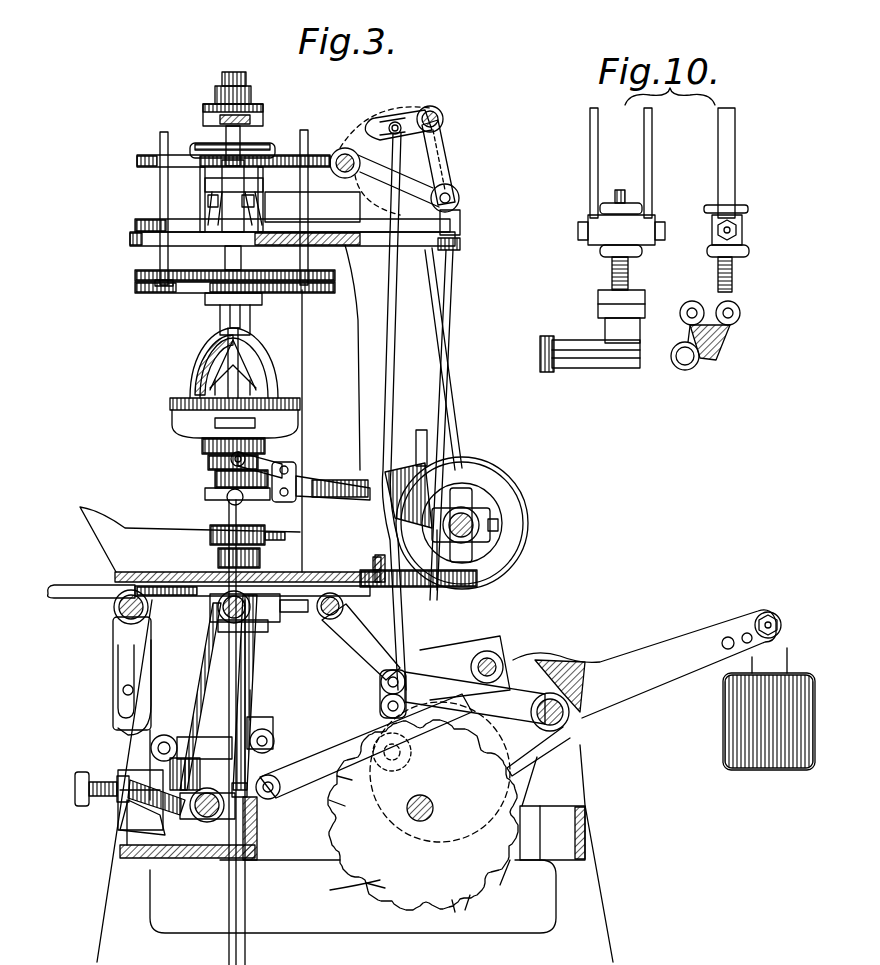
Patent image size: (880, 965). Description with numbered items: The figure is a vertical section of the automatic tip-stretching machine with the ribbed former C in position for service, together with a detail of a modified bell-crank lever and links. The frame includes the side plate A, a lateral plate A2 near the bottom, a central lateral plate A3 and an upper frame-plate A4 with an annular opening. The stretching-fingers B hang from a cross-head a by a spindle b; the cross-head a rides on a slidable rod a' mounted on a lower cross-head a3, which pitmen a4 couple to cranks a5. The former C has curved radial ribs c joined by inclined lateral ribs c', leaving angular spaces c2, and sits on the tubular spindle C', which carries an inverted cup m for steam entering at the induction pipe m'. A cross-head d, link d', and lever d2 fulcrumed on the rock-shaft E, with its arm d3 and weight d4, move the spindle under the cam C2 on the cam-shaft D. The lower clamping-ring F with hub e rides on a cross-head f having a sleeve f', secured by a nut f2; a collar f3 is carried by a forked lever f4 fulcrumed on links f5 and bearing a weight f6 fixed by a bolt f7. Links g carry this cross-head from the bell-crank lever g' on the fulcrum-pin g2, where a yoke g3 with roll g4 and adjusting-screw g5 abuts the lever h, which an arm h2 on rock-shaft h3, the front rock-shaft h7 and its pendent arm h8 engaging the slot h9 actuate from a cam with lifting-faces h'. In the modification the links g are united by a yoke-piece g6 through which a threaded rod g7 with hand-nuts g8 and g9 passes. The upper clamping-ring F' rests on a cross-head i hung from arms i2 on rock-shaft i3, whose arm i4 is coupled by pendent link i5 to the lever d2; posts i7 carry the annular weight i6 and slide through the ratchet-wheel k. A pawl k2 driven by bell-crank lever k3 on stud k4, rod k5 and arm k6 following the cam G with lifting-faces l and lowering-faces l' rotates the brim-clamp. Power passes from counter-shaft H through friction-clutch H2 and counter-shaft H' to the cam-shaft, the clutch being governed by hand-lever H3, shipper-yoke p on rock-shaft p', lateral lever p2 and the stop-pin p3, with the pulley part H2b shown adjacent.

In FIG. 3, the side plate A is at (355, 781).
In FIG. 3, the lateral plate A2 is at (188, 833).
In FIG. 3, the central lateral plate A3 is at (232, 436).
In FIG. 3, the frame-plate A4 is at (130, 240).
In FIG. 3, the stretching-fingers B is at (212, 212).
In FIG. 3, the ribbed former C is at (234, 363).
In FIG. 3, the spindle C' is at (353, 896).
In FIG. 3, the cam C2 is at (368, 890).
In FIG. 3, the curved radial ribs c is at (224, 354).
In FIG. 3, the inclined lateral ribs c' is at (203, 363).
In FIG. 3, the angular spaces c2 is at (212, 368).
In FIG. 3, the cam-shaft D is at (434, 806).
In FIG. 3, the rock-shaft E is at (568, 722).
In FIG. 3, the lower clamping-ring F is at (205, 417).
In FIG. 3, the upper clamping-ring F' is at (210, 274).
In FIG. 3, the cam G is at (423, 806).
In FIG. 3, the counter-shaft H is at (478, 502).
In FIG. 3, the counter-shaft H' is at (504, 652).
In FIG. 3, the friction-clutch H2 is at (527, 500).
In FIG. 3, the pulley part H2b is at (395, 900).
In FIG. 3, the hand-lever H3 is at (98, 590).
In FIG. 3, the cross-head a is at (234, 105).
In FIG. 3, the slidable rod a' is at (245, 314).
In FIG. 3, the cross-head a3 is at (268, 626).
In FIG. 3, the pitmen a4 is at (256, 678).
In FIG. 3, the cranks a5 is at (190, 822).
In FIG. 3, the spindle b is at (225, 74).
In FIG. 3, the cross-head d is at (265, 722).
In FIG. 3, the link d' is at (276, 741).
In FIG. 3, the lever d2 is at (282, 786).
In FIG. 3, the arm d3 is at (705, 652).
In FIG. 3, the weight d4 is at (769, 722).
In FIG. 3, the hub e is at (202, 445).
In FIG. 3, the cross-head f is at (215, 502).
In FIG. 3, the sleeve f' is at (206, 484).
In FIG. 3, the nut f2 is at (258, 422).
In FIG. 3, the collar f3 is at (208, 462).
In FIG. 3, the forked lever f4 is at (290, 468).
In FIG. 3, the links f5 is at (298, 482).
In FIG. 3, the weight f6 is at (400, 475).
In FIG. 3, the bolt f7 is at (440, 472).
In FIG. 3, the links g is at (202, 639).
In FIG. 10, the links g is at (659, 163).
In FIG. 3, the bell-crank lever g' is at (138, 791).
In FIG. 10, the bell-crank lever g' is at (662, 325).
In FIG. 3, the fulcrum-pin g2 is at (165, 738).
In FIG. 3, the pendent yoke g3 is at (128, 815).
In FIG. 10, the roll g4 is at (560, 368).
In FIG. 3, the adjusting-screw g5 is at (81, 787).
In FIG. 3, the yoke-piece g6 is at (117, 792).
In FIG. 10, the yoke-piece g6 is at (783, 228).
In FIG. 10, the screw-threaded rod g7 is at (630, 275).
In FIG. 10, the hand-nut g8 is at (632, 207).
In FIG. 10, the hand-nut g9 is at (783, 256).
In FIG. 3, the lever h is at (111, 687).
In FIG. 3, the lifting-faces h' is at (525, 866).
In FIG. 3, the arm h2 is at (365, 640).
In FIG. 3, the rock-shaft h3 is at (334, 620).
In FIG. 3, the rock-shaft h7 is at (147, 607).
In FIG. 3, the pendent arm h8 is at (118, 636).
In FIG. 3, the vertical slot h9 is at (122, 682).
In FIG. 3, the cross-head i is at (148, 288).
In FIG. 3, the arms i2 is at (268, 138).
In FIG. 3, the rock-shaft i3 is at (343, 148).
In FIG. 3, the arm i4 is at (460, 195).
In FIG. 3, the pendent link i5 is at (440, 335).
In FIG. 3, the annular weight i6 is at (140, 159).
In FIG. 3, the posts i7 is at (316, 195).
In FIG. 3, the ratchet-wheel k is at (137, 226).
In FIG. 3, the pawl k2 is at (372, 235).
In FIG. 3, the bell-crank lever k3 is at (390, 118).
In FIG. 3, the stud k4 is at (430, 106).
In FIG. 3, the rod k5 is at (398, 268).
In FIG. 3, the arm k6 is at (468, 692).
In FIG. 3, the lifting-faces l is at (357, 837).
In FIG. 3, the lowering-faces l' is at (396, 835).
In FIG. 3, the inverted cup m is at (275, 368).
In FIG. 3, the induction pipe m' is at (253, 525).
In FIG. 3, the shipper-yoke p is at (495, 527).
In FIG. 3, the rock-shaft p' is at (450, 574).
In FIG. 3, the lateral lever p2 is at (318, 612).
In FIG. 3, the stop-pin p3 is at (262, 558).